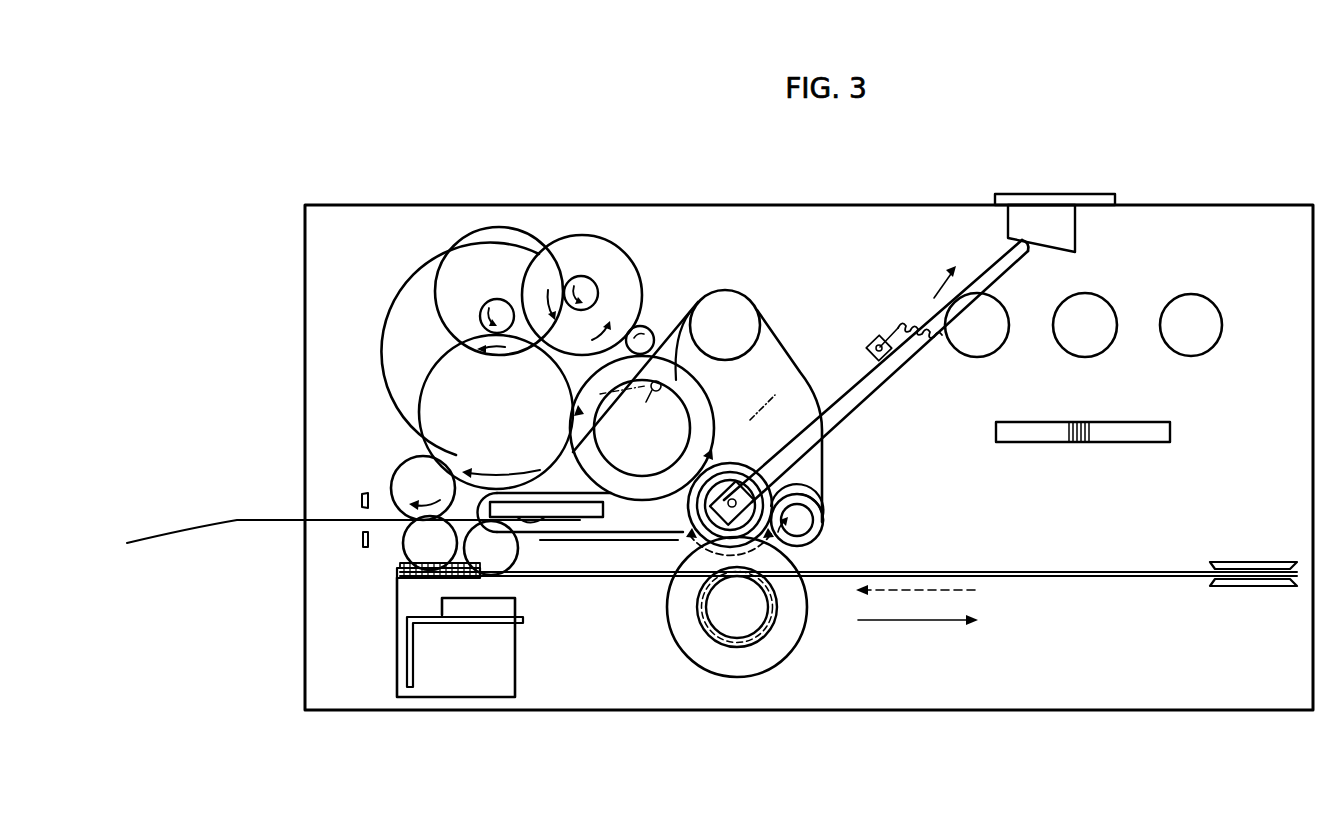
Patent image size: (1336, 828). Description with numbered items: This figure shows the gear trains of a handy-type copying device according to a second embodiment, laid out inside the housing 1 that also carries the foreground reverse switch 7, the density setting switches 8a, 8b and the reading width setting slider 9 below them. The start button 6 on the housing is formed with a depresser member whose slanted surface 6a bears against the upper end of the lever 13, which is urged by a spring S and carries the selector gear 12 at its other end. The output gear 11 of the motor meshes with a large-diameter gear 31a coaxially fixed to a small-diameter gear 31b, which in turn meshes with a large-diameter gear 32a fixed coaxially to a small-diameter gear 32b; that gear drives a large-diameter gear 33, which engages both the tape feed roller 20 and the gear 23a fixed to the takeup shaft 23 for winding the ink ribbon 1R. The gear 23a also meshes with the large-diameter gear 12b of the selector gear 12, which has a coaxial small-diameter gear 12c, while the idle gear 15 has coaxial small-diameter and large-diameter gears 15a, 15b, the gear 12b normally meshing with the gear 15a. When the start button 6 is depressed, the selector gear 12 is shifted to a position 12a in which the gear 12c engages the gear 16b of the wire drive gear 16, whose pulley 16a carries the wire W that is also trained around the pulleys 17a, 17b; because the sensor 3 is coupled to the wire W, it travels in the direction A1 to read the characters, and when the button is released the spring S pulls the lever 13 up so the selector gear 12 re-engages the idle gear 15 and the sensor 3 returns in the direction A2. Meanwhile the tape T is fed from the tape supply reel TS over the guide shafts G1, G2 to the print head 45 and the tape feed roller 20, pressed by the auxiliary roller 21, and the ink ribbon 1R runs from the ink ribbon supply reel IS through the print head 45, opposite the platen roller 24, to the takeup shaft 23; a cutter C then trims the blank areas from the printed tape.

The housing 1 is at (1222, 204).
The sensor 3 is at (500, 665).
The start button 6 is at (1050, 194).
The slanted surface 6a is at (1040, 250).
The foreground reverse switch 7 is at (988, 338).
The density setting switch 8a is at (1095, 340).
The density setting switch 8b is at (1200, 340).
The reading width setting slider 9 is at (1085, 443).
The output gear 11 is at (645, 332).
The selector gear 12 is at (735, 458).
The selector gear position 12a is at (690, 535).
The large-diameter gear 12b is at (753, 473).
The small-diameter gear 12c is at (700, 560).
The lever 13 is at (893, 380).
The idle gear 15 is at (834, 540).
The small-diameter gear 15a is at (812, 540).
The large-diameter gear 15b is at (822, 517).
The wire drive gear 16 is at (712, 640).
The pulley 16a is at (757, 625).
The gear 16b is at (792, 630).
The pulley 17a is at (400, 566).
The pulley 17b is at (1250, 588).
The tape feed roller 20 is at (405, 472).
The auxiliary roller 21 is at (400, 547).
The takeup shaft 23 is at (642, 428).
The gear 23a is at (691, 308).
The platen roller 24 is at (507, 550).
The large-diameter gear 31a is at (607, 288).
The small-diameter gear 31b is at (583, 280).
The large-diameter gear 32a is at (499, 268).
The small-diameter gear 32b is at (490, 312).
The large-diameter gear 33 is at (447, 405).
The print head 45 is at (586, 510).
The ink ribbon 1R is at (600, 468).
The tape supply reel TS is at (393, 303).
The ink ribbon supply reel IS is at (755, 415).
The guide shaft G1 is at (742, 318).
The guide shaft G2 is at (815, 513).
The spring S is at (925, 300).
The tape T is at (237, 520).
The cutter C is at (360, 500).
The wire W is at (1097, 578).
The direction arrow A1 is at (900, 622).
The direction arrow A2 is at (938, 593).